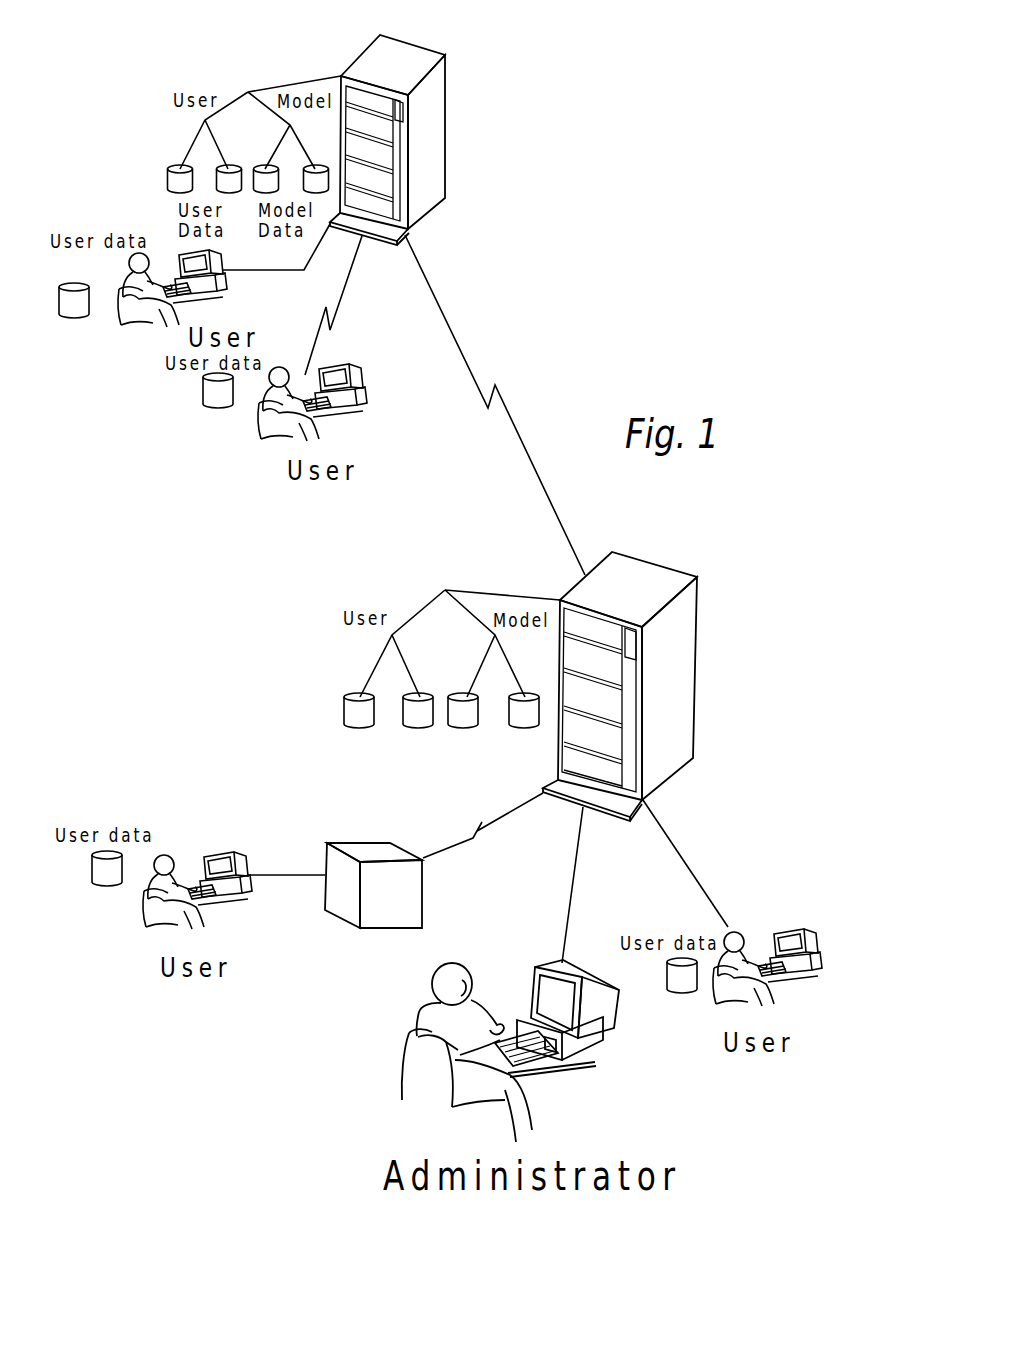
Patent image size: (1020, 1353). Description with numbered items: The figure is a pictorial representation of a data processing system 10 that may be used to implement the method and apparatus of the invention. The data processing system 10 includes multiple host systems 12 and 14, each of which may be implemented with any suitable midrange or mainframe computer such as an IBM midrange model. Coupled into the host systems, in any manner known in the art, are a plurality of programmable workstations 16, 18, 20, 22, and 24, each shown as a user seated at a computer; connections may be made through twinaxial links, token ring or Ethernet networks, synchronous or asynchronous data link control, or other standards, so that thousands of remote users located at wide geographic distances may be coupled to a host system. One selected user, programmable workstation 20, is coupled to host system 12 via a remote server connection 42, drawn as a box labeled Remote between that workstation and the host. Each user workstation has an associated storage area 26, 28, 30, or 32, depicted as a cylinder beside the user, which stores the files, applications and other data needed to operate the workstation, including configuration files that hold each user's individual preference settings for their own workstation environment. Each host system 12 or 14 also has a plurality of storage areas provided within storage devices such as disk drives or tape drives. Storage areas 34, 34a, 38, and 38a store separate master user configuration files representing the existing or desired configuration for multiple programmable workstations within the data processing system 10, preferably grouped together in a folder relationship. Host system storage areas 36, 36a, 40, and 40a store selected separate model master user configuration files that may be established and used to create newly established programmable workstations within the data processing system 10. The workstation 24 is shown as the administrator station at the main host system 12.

The data processing system 10 is at (305, 578).
The host system 12 is at (696, 688).
The host system 14 is at (447, 135).
The programmable workstation 16 is at (146, 326).
The programmable workstation 18 is at (270, 437).
The programmable workstation 20 is at (150, 927).
The programmable workstation 22 is at (782, 996).
The programmable workstation 24 is at (602, 1060).
The storage area 26 is at (80, 317).
The storage area 28 is at (218, 408).
The storage area 30 is at (107, 887).
The storage area 32 is at (687, 992).
The storage area 34 is at (167, 183).
The storage area 34a is at (218, 178).
The host system storage area 36 is at (265, 177).
The host system storage area 36a is at (312, 177).
The storage area 38 is at (357, 728).
The storage area 38a is at (421, 723).
The host system storage area 40 is at (467, 700).
The host system storage area 40a is at (527, 724).
The remote server connection 42 is at (377, 845).